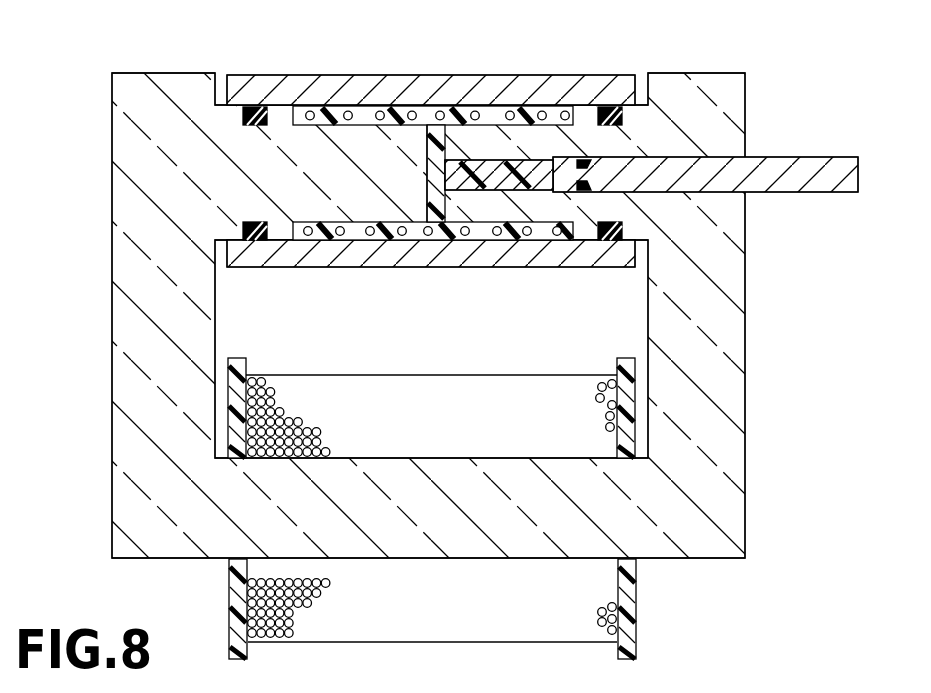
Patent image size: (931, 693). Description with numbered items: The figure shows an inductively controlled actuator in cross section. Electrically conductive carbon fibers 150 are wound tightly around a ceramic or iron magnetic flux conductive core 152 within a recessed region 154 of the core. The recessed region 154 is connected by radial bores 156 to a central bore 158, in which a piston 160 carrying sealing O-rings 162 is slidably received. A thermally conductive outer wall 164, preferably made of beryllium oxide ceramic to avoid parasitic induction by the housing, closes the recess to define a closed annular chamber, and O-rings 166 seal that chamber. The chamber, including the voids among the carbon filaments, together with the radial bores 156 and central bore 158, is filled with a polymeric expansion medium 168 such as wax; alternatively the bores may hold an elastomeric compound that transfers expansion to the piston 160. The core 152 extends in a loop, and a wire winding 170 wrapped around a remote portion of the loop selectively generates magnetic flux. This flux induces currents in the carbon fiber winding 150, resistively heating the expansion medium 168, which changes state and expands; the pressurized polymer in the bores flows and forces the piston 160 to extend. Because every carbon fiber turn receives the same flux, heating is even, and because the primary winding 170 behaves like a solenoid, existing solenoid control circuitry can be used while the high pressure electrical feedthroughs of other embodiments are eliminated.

The electrically conductive carbon fibers 150 is at (543, 112).
The magnetic flux conductive core 152 is at (143, 268).
The recessed region 154 is at (573, 243).
The radial bores 156 is at (434, 149).
The central bore 158 is at (478, 162).
The piston 160 is at (836, 157).
The sealing O-rings 162 is at (588, 183).
The thermally conductive outer wall 164 is at (348, 75).
The O-rings 166 is at (253, 107).
The polymeric expansion medium 168 is at (438, 126).
The wire winding 170 is at (483, 617).